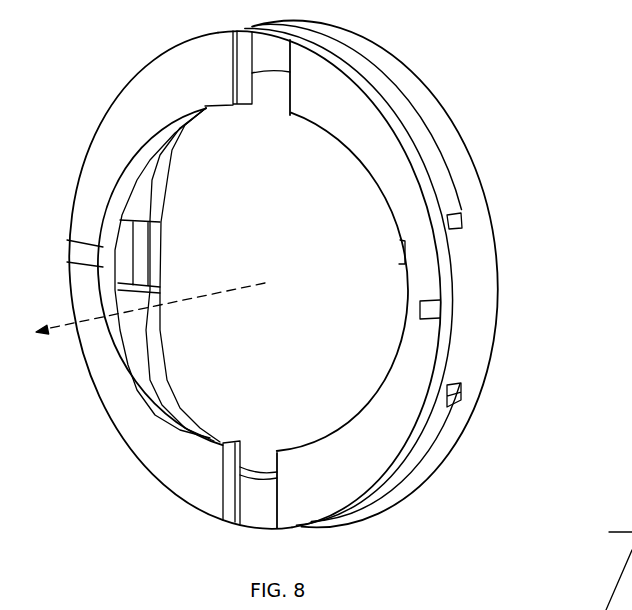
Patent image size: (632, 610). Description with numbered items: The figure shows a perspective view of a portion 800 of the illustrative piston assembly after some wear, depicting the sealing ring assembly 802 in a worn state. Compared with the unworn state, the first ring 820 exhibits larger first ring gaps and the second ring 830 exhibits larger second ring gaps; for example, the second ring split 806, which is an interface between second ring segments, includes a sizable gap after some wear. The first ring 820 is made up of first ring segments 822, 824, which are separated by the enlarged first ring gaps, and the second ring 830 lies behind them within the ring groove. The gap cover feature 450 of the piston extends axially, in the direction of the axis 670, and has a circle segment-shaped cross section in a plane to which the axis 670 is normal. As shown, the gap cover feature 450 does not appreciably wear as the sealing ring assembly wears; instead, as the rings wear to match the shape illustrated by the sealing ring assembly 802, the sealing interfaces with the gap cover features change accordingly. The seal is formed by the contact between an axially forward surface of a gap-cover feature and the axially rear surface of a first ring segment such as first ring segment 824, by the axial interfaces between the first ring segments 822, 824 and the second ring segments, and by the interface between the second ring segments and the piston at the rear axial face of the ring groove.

The portion 800 is at (108, 40).
The sealing ring assembly 802 is at (541, 42).
The first ring 820 is at (386, 131).
The second ring 830 is at (441, 171).
The gap-cover feature 450 is at (466, 316).
The second ring split 806 is at (170, 226).
The axis 670 is at (141, 323).
The first ring segment 824 is at (170, 495).
The first ring segment 822 is at (313, 503).